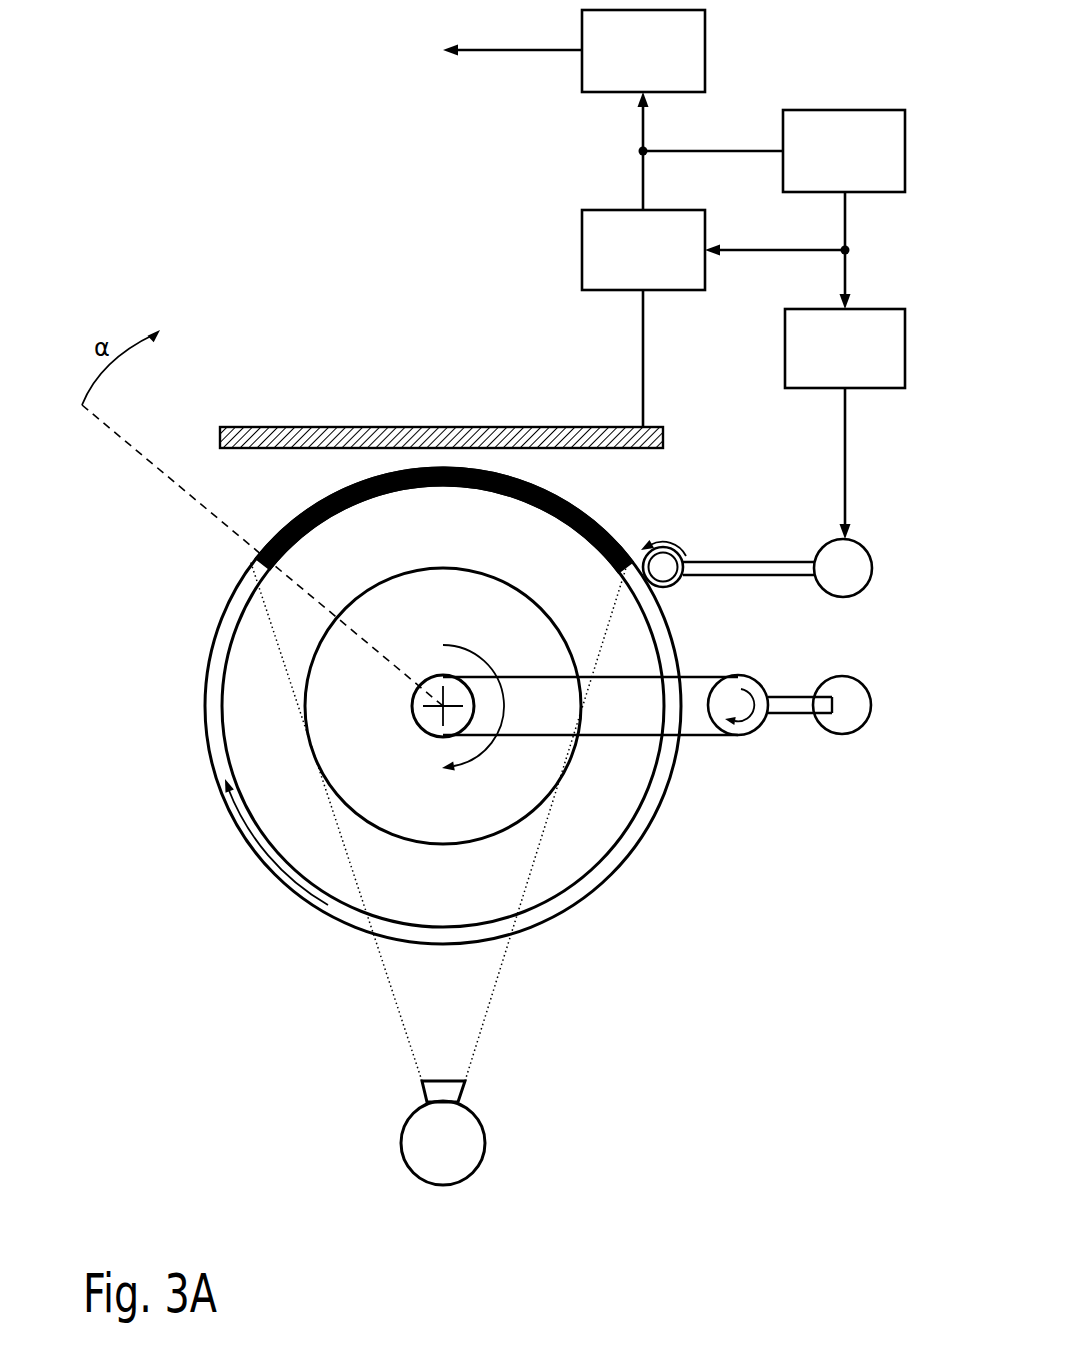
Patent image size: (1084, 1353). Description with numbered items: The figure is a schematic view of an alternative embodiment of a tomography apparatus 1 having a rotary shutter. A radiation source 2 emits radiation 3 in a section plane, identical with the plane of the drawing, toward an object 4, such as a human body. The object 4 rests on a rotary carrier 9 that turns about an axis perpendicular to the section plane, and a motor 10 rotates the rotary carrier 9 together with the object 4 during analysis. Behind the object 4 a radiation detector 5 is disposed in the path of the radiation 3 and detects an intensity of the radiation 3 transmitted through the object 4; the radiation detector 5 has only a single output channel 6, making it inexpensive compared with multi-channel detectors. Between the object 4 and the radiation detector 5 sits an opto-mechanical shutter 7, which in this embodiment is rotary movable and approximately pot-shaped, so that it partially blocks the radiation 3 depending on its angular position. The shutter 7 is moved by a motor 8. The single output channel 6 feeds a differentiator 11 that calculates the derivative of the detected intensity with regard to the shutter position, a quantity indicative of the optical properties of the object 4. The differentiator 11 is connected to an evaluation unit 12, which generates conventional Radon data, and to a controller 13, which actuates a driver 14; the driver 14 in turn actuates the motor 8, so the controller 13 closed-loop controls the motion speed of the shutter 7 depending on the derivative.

The tomography apparatus 1 is at (768, 963).
The radiation source 2 is at (485, 1143).
The radiation 3 is at (482, 1022).
The object 4 is at (464, 612).
The radiation detector 5 is at (255, 427).
The single output channel 6 is at (643, 405).
The opto-mechanical shutter 7 is at (605, 527).
The motor 8 is at (872, 572).
The rotary carrier 9 is at (373, 583).
The motor 10 is at (871, 707).
The differentiator 11 is at (582, 249).
The evaluation unit 12 is at (705, 30).
The controller 13 is at (783, 170).
The driver 14 is at (785, 350).